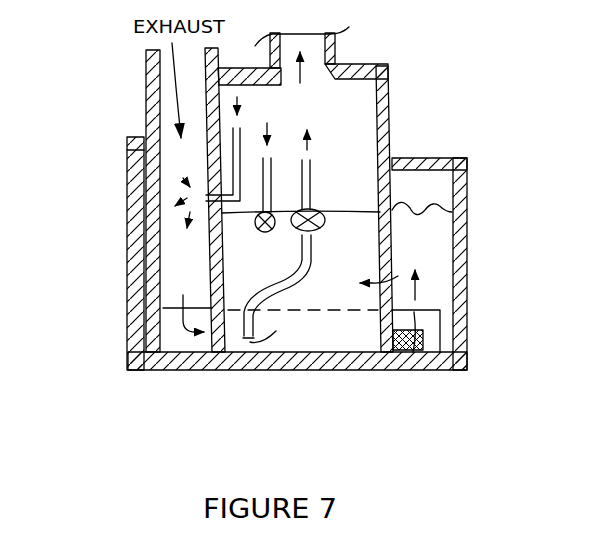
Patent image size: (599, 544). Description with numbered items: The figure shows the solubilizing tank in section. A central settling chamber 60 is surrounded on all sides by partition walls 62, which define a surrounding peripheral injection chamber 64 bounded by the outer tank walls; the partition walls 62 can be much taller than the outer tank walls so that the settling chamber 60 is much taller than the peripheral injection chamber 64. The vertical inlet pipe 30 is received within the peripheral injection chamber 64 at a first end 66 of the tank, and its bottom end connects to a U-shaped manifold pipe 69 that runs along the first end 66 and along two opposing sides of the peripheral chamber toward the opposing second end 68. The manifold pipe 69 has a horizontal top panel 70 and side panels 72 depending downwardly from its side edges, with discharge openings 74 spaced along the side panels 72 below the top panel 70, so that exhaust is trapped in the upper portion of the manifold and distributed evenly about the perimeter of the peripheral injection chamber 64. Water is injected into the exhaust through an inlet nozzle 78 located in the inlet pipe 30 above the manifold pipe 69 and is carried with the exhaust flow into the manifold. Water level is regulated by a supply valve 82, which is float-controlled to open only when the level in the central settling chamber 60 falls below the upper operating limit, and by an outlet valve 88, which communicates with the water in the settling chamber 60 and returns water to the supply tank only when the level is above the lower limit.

The vertical inlet pipe 30 is at (153, 122).
The central settling chamber 60 is at (358, 185).
The partition walls 62 is at (388, 135).
The peripheral injection chamber 64 is at (432, 179).
The first end 66 is at (143, 388).
The second end 68 is at (467, 386).
The manifold pipe 69 is at (437, 322).
The top panel 70 is at (427, 312).
The side panels 72 is at (457, 297).
The discharge openings 74 is at (413, 352).
The inlet nozzle 78 is at (236, 198).
The supply valve 82 is at (255, 228).
The outlet valve 88 is at (323, 229).